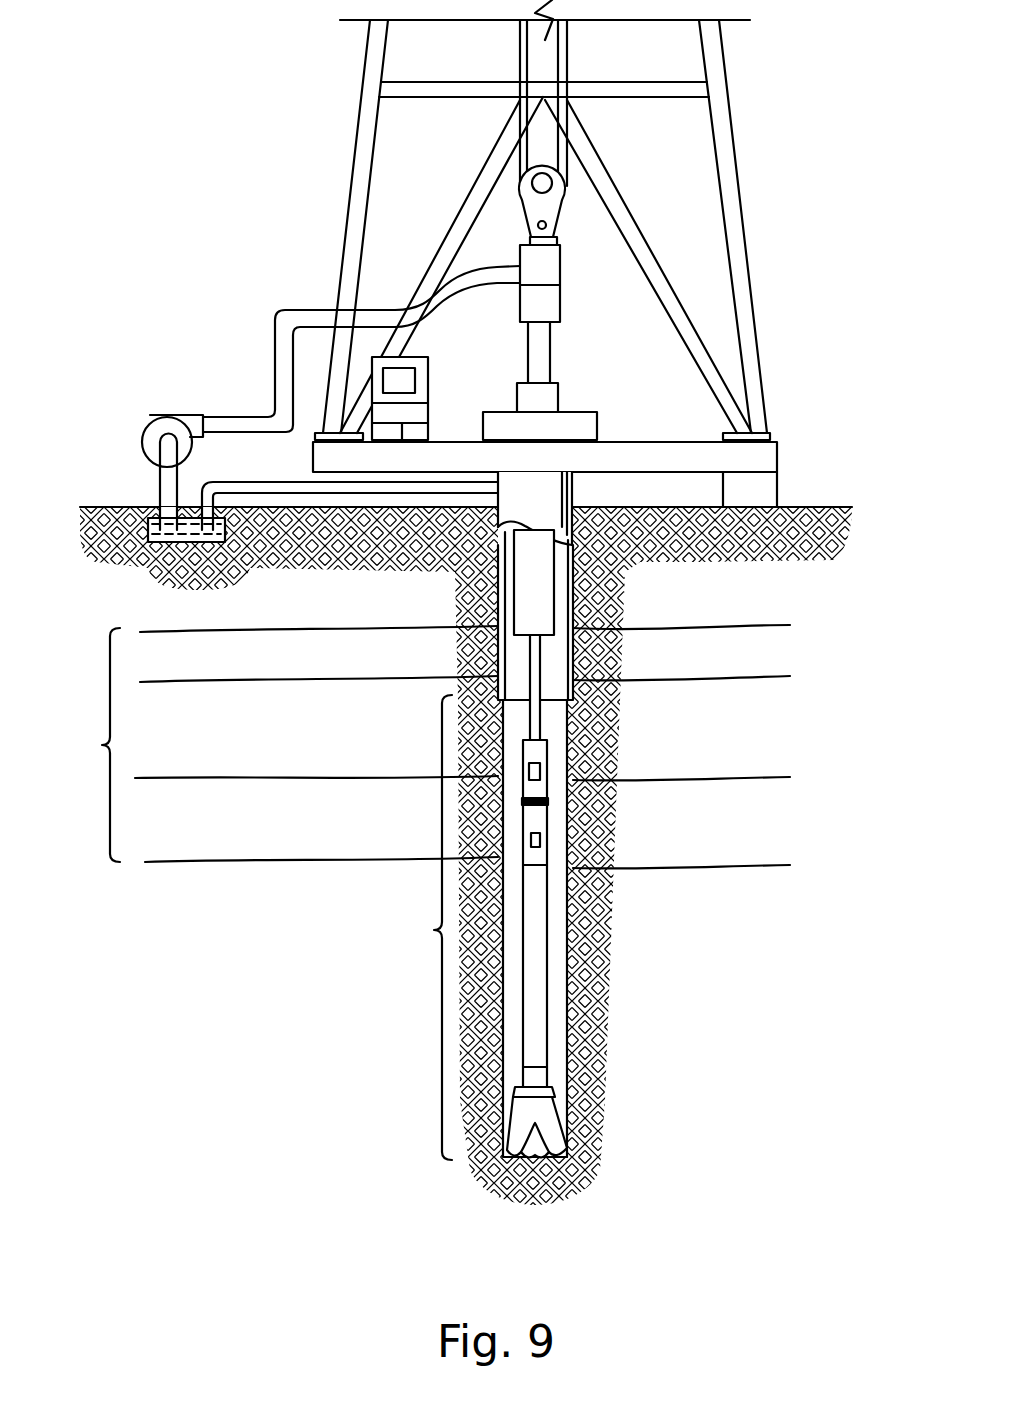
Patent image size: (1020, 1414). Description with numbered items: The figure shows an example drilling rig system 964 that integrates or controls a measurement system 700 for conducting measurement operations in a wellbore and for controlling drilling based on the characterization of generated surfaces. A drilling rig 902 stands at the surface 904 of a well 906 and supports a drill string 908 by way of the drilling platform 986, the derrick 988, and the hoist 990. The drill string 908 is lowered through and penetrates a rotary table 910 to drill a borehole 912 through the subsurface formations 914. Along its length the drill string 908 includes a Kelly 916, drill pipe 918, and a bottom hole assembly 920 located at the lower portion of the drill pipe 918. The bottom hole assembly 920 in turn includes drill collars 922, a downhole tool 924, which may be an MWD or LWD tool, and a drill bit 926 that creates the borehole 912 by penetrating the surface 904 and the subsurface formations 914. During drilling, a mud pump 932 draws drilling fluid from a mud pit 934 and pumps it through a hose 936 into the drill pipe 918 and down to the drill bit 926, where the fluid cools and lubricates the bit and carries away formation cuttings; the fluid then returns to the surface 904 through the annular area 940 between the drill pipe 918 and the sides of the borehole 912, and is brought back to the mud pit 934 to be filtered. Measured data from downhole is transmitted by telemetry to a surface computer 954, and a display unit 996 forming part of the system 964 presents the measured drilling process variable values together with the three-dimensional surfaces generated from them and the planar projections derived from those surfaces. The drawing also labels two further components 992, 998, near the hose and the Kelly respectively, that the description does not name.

The drilling rig system 964 is at (218, 112).
The derrick 988 is at (727, 111).
The drilling rig 902 is at (756, 209).
The hoist 990 is at (563, 205).
The hose / flow line 992 is at (421, 345).
The hose 936 is at (276, 362).
The surface computer 954 is at (430, 368).
The display unit 996 is at (415, 383).
The rotary table 910 is at (500, 412).
The kelly bushing 998 is at (560, 393).
The Kelly 916 is at (552, 342).
The mud pump 932 is at (168, 415).
The mud pit 934 is at (180, 545).
The drilling platform 986 is at (779, 449).
The surface 904 is at (800, 507).
The well 906 is at (592, 499).
The drill collars 922 is at (553, 593).
The drill pipe 918 is at (537, 675).
The annular area 940 is at (560, 727).
The system 700 is at (557, 754).
The subsurface formations 914 is at (415, 747).
The bottom hole assembly 920 is at (411, 927).
The drill string 908 is at (561, 937).
The borehole 912 is at (567, 1010).
The downhole tool 924 is at (536, 1047).
The drill bit 926 is at (543, 1110).